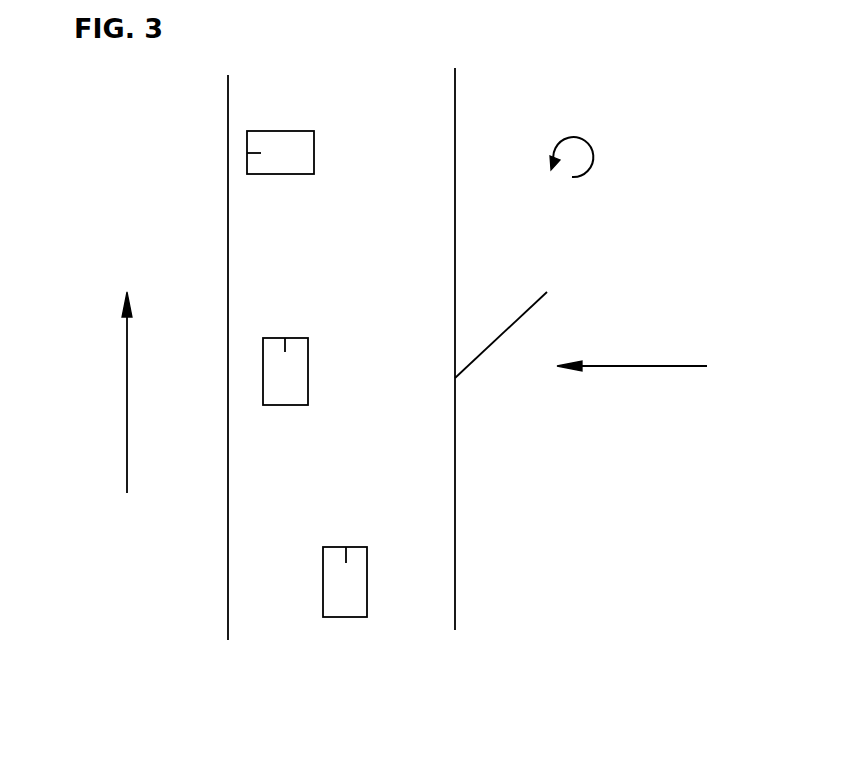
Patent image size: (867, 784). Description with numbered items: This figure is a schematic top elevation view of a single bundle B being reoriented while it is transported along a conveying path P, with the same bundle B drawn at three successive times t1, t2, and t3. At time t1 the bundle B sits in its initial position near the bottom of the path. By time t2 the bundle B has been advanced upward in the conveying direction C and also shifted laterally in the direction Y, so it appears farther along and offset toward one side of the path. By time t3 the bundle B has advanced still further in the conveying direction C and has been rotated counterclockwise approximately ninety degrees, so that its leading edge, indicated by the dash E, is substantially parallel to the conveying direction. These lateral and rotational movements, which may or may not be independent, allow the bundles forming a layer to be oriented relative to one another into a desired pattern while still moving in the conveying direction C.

The time t1 is at (352, 560).
The time t2 is at (308, 372).
The time t3 is at (314, 152).
The dash indicating leading edge E is at (344, 552).
The bundle B is at (345, 617).
The conveying path P is at (507, 327).
The lateral direction Y is at (632, 377).
The conveying direction C is at (117, 392).